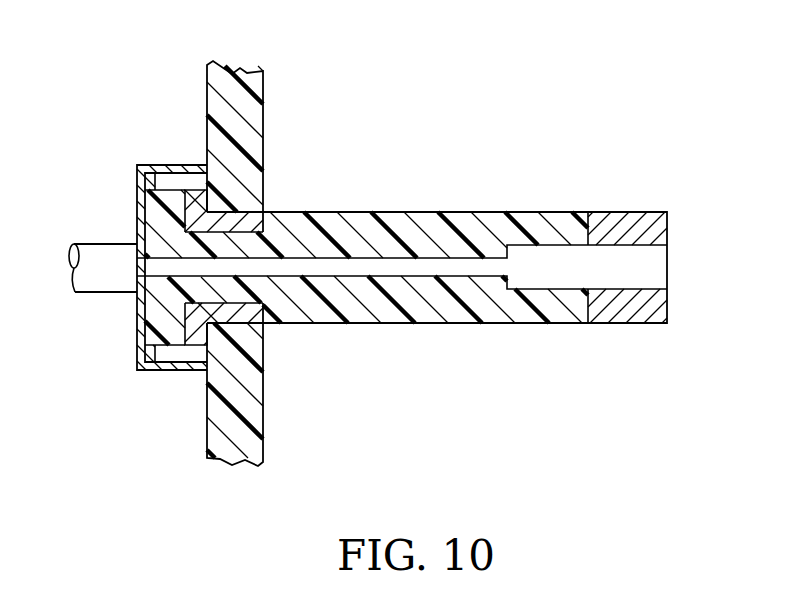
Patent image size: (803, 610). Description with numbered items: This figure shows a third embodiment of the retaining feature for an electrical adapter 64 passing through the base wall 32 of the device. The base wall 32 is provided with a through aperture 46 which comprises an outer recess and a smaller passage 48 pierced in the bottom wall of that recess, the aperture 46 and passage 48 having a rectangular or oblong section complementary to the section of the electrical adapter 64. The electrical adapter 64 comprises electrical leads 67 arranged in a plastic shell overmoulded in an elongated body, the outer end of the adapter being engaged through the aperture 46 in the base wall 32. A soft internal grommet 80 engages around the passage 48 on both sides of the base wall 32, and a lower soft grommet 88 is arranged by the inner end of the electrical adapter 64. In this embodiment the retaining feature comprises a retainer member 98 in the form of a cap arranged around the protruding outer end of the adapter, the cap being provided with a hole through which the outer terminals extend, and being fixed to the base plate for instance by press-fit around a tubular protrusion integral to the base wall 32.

The base wall 32 is at (218, 100).
The soft internal grommet 80 is at (160, 185).
The retainer member 98 is at (137, 325).
The electrical adapter 64 is at (402, 250).
The lower soft grommet 88 is at (622, 213).
The electrical leads 67 is at (453, 318).
The smaller passage 48 is at (402, 332).
The through aperture 46 is at (321, 358).